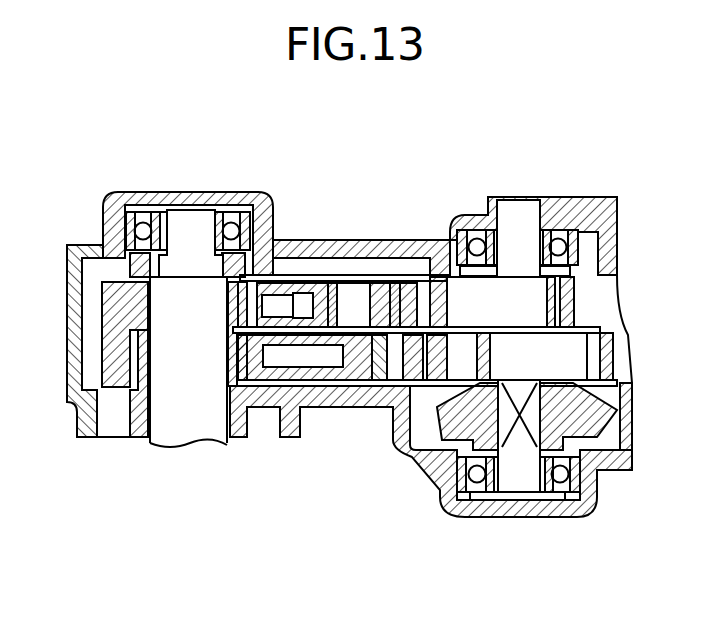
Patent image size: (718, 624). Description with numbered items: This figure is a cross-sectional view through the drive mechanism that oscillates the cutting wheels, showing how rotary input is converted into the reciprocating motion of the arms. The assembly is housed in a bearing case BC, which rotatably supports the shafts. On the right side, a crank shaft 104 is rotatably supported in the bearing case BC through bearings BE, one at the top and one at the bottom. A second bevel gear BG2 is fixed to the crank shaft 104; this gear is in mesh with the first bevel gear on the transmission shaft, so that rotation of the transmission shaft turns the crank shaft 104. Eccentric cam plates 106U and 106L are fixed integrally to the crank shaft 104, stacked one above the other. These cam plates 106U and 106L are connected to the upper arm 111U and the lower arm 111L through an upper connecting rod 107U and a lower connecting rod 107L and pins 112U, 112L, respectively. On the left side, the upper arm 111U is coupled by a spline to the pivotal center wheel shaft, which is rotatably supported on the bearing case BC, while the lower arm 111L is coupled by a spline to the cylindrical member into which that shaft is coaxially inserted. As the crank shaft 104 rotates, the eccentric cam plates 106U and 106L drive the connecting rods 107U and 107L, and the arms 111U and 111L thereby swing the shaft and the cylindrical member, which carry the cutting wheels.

The bearing BE is at (231, 238).
The bearing case BC is at (313, 238).
The crank shaft 104 is at (530, 212).
The upper eccentric cam plate 106U is at (530, 307).
The lower eccentric cam plate 106L is at (570, 345).
The upper connecting rod 107U is at (405, 292).
The lower connecting rod 107L is at (440, 362).
The upper arm 111U is at (272, 240).
The lower arm 111L is at (312, 375).
The upper pin 112U is at (357, 292).
The lower pin 112L is at (377, 380).
The second bevel gear BG2 is at (585, 410).